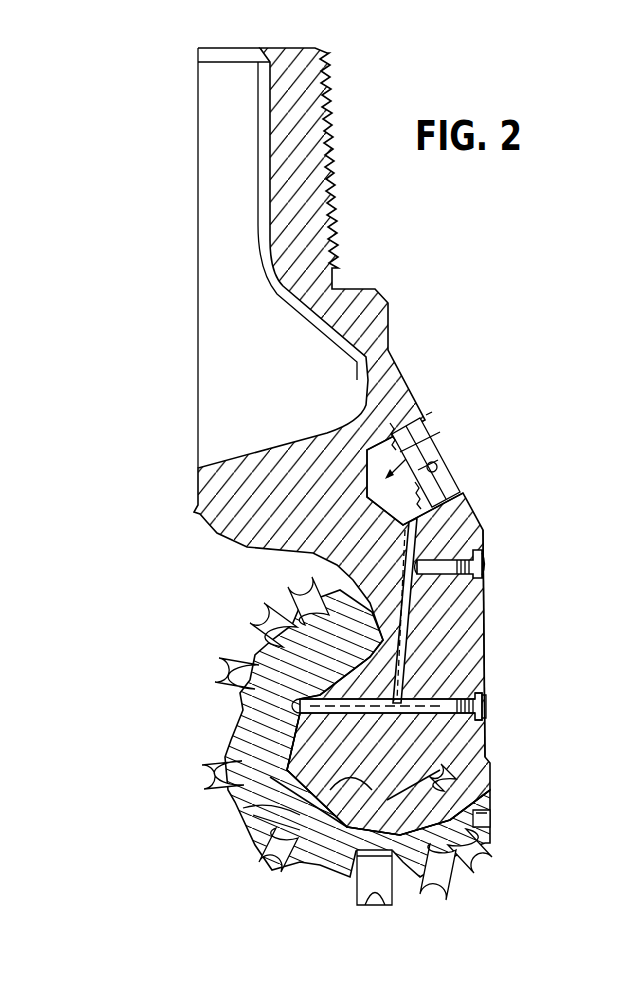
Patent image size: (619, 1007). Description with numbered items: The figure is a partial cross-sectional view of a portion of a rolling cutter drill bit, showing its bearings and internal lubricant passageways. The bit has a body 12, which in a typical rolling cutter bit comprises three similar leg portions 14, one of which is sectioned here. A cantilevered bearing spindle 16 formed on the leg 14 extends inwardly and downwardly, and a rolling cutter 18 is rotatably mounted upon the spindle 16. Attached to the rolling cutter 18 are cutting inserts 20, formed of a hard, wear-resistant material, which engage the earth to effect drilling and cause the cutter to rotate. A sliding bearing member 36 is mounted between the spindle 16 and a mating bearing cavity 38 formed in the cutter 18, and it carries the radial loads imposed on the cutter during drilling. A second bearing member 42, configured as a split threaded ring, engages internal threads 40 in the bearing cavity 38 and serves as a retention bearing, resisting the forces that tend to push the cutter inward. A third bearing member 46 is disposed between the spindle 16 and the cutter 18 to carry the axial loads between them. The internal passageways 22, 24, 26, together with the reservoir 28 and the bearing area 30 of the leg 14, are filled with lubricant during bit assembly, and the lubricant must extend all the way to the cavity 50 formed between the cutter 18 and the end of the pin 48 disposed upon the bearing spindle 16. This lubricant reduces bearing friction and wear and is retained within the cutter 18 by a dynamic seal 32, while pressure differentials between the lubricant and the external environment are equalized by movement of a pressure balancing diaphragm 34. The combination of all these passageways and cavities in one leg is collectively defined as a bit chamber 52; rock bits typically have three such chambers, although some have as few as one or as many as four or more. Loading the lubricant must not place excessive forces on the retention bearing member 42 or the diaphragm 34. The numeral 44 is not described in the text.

The body 12 is at (421, 345).
The leg portion 14 is at (437, 618).
The cantilevered bearing spindle 16 is at (463, 727).
The rolling cutter 18 is at (222, 726).
The cutting insert 20 is at (202, 775).
The internal passageway 22 is at (413, 546).
The internal passageway 24 is at (440, 567).
The internal passageway 26 is at (448, 692).
The reservoir 28 is at (432, 445).
The bearing area 30 is at (488, 815).
The dynamic seal 32 is at (462, 768).
The pressure balancing diaphragm 34 is at (425, 423).
The sliding bearing member 36 is at (293, 582).
The bearing cavity 38 is at (248, 620).
The internal threads 40 is at (227, 693).
The second bearing member 42 is at (440, 867).
The cone shell 44 is at (257, 832).
The third bearing member 46 is at (317, 800).
The pin 48 is at (243, 808).
The cavity 50 is at (253, 815).
The bit chamber 52 is at (492, 705).